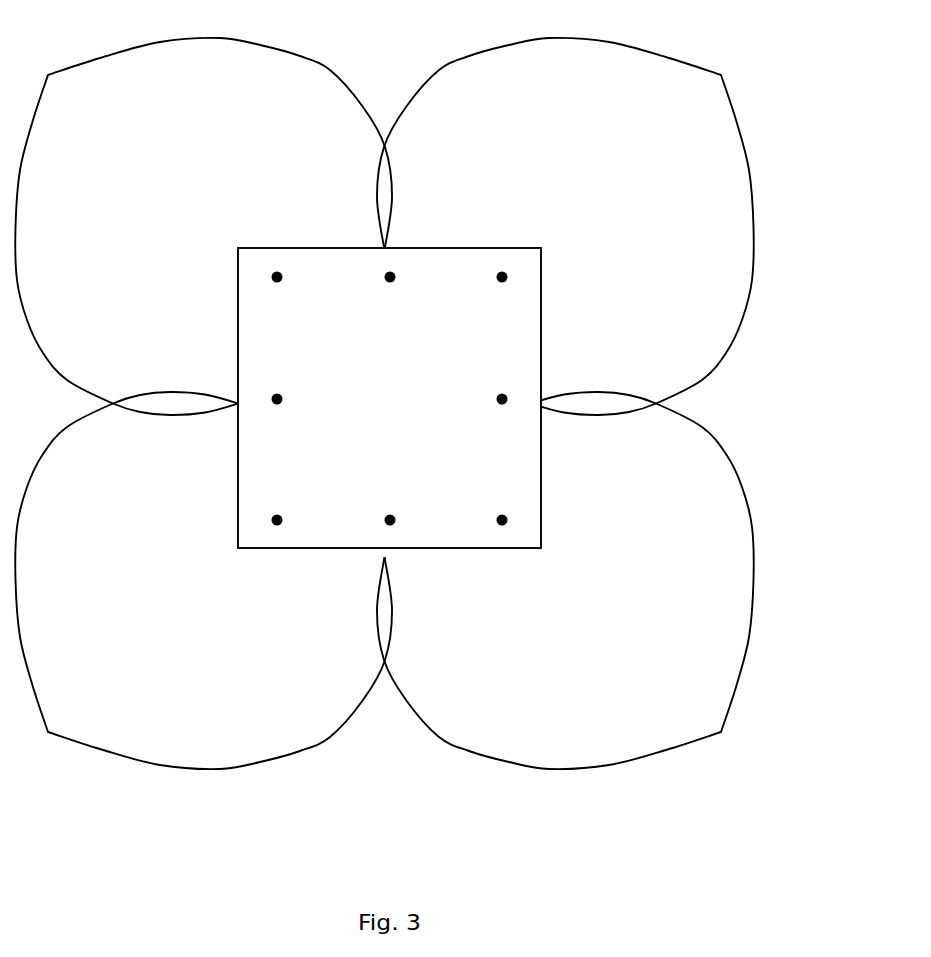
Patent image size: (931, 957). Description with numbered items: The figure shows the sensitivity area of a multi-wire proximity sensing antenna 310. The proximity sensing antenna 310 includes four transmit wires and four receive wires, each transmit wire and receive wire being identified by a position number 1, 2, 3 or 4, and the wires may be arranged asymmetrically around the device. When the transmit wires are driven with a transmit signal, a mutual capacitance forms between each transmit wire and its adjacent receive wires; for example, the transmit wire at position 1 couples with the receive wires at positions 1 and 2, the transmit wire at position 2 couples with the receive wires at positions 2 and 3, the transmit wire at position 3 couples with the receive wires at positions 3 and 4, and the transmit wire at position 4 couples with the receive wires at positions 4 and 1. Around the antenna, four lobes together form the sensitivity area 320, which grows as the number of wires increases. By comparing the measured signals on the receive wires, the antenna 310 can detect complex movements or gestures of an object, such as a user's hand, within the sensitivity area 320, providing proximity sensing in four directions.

The proximity sensing antenna 310 is at (389, 361).
The sensitivity area 320 is at (752, 273).
The transmit element TX1 and receive element RX1 1 is at (332, 295).
The transmit element TX2 and receive element RX2 2 is at (502, 356).
The transmit element TX3 and receive element RX3 3 is at (445, 500).
The transmit element TX4 and receive element RX4 4 is at (276, 460).